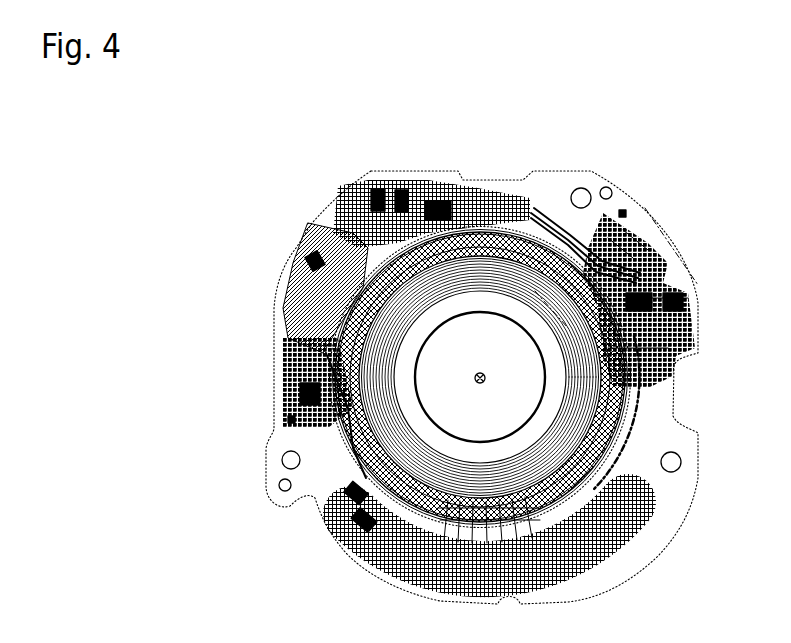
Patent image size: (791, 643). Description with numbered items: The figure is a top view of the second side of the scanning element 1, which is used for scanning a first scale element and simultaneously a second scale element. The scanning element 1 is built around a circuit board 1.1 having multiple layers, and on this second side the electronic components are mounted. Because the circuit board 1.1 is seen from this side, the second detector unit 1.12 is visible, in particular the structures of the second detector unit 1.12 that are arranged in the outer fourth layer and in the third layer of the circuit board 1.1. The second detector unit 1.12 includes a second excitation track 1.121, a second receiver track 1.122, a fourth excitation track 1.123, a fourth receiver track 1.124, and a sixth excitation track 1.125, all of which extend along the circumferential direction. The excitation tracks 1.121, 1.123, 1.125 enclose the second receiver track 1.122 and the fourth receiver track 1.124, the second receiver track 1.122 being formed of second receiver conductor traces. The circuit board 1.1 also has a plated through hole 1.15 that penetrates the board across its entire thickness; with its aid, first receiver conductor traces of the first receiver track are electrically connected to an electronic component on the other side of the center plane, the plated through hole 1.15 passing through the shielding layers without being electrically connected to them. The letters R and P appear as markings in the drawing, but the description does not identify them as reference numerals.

The scanning element 1 is at (301, 186).
The circuit board 1.1 is at (286, 263).
The second detector unit 1.12 is at (325, 349).
The second excitation track 1.121 is at (327, 387).
The second receiver track 1.122 is at (601, 348).
The fourth excitation track 1.123 is at (362, 408).
The fourth receiver track 1.124 is at (579, 390).
The sixth excitation track 1.125 is at (400, 433).
The plated through hole 1.15 is at (487, 498).
The rotation axis R is at (466, 370).
The pitch direction P is at (652, 214).